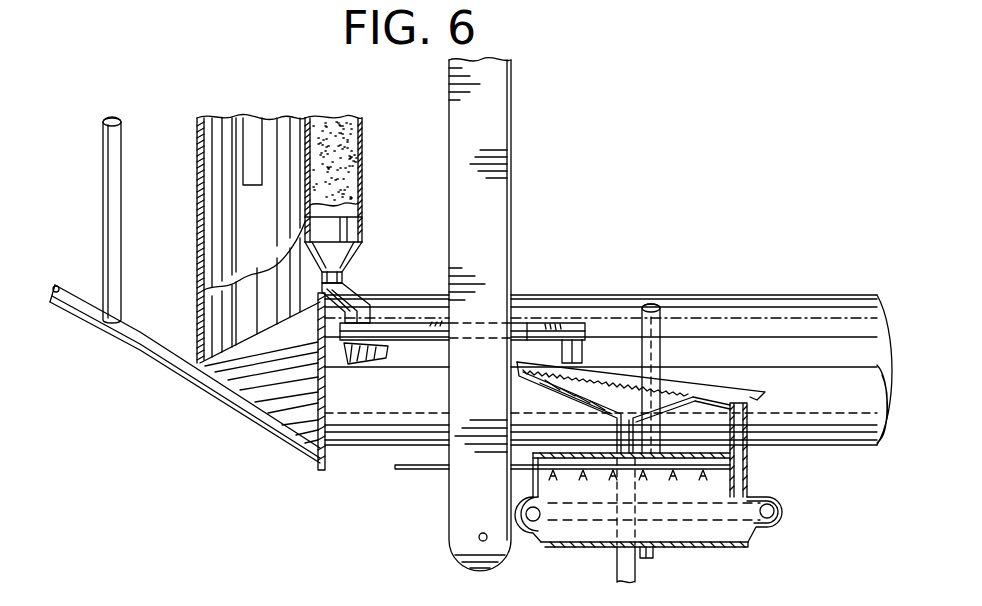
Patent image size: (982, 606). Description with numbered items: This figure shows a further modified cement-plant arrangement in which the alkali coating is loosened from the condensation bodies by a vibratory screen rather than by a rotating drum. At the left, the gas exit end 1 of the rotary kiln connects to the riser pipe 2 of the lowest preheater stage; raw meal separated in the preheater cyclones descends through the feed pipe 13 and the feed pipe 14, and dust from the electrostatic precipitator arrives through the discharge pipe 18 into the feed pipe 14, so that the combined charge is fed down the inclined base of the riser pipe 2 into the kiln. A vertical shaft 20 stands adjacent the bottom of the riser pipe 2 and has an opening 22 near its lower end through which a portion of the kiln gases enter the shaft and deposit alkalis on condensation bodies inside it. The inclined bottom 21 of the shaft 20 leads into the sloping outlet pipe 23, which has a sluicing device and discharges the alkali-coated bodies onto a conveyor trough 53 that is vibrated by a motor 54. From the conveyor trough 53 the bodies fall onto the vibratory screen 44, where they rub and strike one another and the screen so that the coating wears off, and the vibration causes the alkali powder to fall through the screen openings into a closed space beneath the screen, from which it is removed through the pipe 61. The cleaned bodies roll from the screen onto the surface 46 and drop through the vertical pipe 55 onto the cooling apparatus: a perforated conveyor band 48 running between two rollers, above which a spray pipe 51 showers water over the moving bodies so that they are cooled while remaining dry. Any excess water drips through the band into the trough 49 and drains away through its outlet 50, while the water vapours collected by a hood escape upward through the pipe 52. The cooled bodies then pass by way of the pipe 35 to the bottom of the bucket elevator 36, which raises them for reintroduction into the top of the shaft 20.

The gas exit end of rotary kiln 1 is at (828, 313).
The riser pipe 2 is at (199, 227).
The feed pipe 13 is at (246, 188).
The feed pipe 14 is at (71, 298).
The discharge pipe 18 is at (108, 207).
The shaft 20 is at (355, 140).
The bottom of the shaft 21 is at (336, 257).
The opening 22 is at (355, 201).
The sloping outlet pipe 23 is at (336, 282).
The pipe 35 is at (582, 355).
The bucket elevator 36 is at (495, 138).
The vibratory screen 44 is at (625, 388).
The surface 46 is at (713, 402).
The perforated conveyor band 48 is at (580, 520).
The trough 49 is at (741, 540).
The outlet 50 is at (653, 552).
The spray pipe 51 is at (413, 470).
The pipe 52 is at (660, 313).
The conveyor trough 53 is at (528, 330).
The motor 54 is at (386, 351).
The vertical pipe 55 is at (748, 465).
The pipe 61 is at (619, 555).